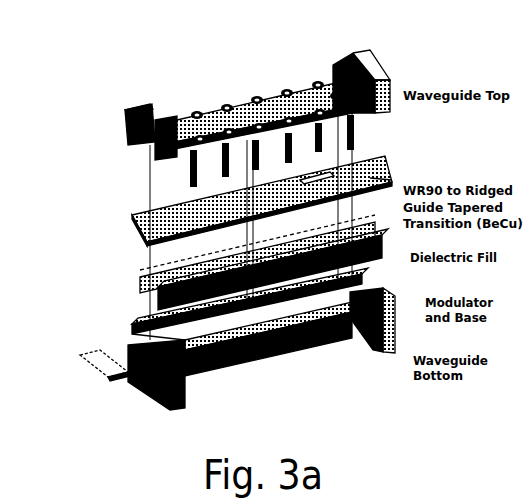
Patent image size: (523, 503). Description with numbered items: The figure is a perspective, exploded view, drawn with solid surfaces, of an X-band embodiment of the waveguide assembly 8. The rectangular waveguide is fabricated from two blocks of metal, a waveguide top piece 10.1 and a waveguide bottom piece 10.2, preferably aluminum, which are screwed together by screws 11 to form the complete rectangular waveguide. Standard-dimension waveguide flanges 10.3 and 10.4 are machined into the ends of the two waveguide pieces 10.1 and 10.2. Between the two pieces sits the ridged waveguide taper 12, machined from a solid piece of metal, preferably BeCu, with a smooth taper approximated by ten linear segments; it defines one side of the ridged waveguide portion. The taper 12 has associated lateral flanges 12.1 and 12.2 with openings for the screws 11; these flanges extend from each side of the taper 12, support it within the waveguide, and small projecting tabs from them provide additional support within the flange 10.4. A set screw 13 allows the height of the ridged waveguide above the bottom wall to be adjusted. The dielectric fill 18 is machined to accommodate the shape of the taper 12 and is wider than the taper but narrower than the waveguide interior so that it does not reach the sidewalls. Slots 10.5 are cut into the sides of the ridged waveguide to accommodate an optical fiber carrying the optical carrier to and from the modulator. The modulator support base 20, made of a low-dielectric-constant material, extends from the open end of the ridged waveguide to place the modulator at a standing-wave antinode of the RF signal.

The waveguide assembly 8 is at (63, 87).
The waveguide top piece 10.1 is at (273, 100).
The waveguide bottom piece 10.2 is at (308, 348).
The waveguide flange 10.3 is at (127, 128).
The waveguide flange 10.4 is at (403, 63).
The slots 10.5 is at (228, 366).
The screws 11 is at (190, 168).
The ridged waveguide taper 12 is at (148, 230).
The lateral flange 12.1 is at (366, 179).
The lateral flange 12.2 is at (328, 165).
The set screw 13 is at (333, 93).
The dielectric fill 18 is at (140, 285).
The modulator support base 20 is at (103, 366).